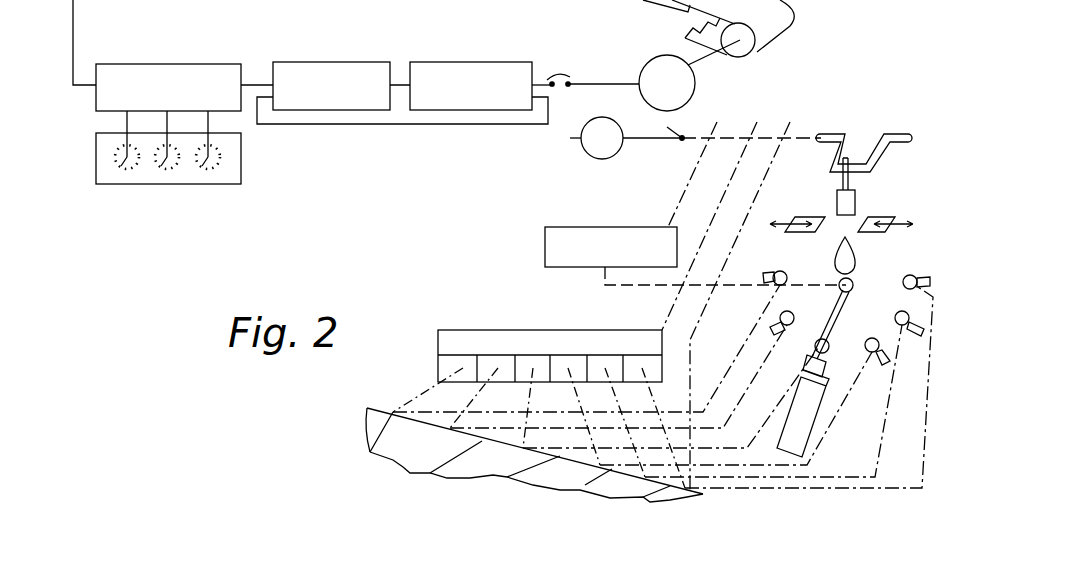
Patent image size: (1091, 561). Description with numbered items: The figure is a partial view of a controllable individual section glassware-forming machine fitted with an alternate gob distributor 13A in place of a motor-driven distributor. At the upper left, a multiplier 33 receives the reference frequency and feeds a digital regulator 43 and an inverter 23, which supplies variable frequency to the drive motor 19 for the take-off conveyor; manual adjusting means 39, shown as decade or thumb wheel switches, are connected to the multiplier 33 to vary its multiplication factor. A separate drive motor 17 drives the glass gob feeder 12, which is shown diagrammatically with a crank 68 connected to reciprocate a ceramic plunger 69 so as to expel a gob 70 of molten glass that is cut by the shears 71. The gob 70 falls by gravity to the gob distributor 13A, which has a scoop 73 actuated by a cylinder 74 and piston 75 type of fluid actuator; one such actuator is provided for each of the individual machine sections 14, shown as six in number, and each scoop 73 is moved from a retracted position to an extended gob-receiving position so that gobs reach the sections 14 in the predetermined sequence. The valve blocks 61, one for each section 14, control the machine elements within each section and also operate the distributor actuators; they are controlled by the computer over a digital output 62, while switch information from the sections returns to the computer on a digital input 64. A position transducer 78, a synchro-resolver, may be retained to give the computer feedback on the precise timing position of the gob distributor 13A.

The glass gob feeder 12 is at (874, 209).
The alternate gob distributor 13A is at (880, 327).
The individual machine sections 14 is at (372, 424).
The drive motor 17 is at (586, 153).
The drive motor 19 is at (652, 58).
The inverter 23 is at (497, 62).
The multiplier circuit 33 is at (207, 64).
The manual adjusting means 39 is at (243, 164).
The digital regulator 43 is at (365, 62).
The valve blocks 61 is at (450, 330).
The digital output 62 is at (757, 126).
The digital input 64 is at (790, 126).
The crank 68 is at (847, 142).
The ceramic plunger 69 is at (857, 203).
The gob 70 is at (860, 253).
The shears 71 is at (816, 217).
The scoop 73 is at (854, 288).
The cylinder 74 is at (818, 420).
The piston 75 is at (820, 370).
The position transducer 78 is at (595, 227).